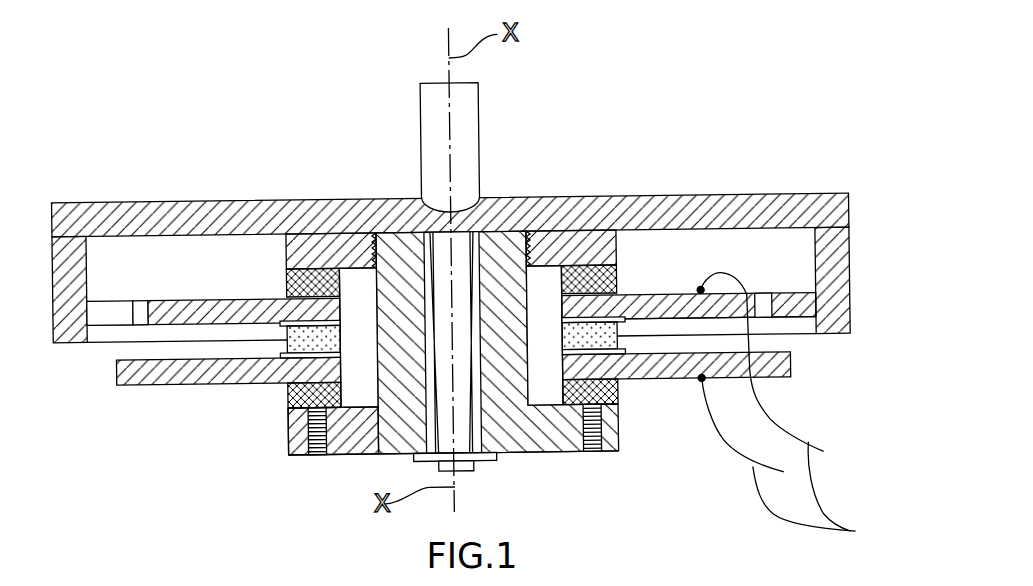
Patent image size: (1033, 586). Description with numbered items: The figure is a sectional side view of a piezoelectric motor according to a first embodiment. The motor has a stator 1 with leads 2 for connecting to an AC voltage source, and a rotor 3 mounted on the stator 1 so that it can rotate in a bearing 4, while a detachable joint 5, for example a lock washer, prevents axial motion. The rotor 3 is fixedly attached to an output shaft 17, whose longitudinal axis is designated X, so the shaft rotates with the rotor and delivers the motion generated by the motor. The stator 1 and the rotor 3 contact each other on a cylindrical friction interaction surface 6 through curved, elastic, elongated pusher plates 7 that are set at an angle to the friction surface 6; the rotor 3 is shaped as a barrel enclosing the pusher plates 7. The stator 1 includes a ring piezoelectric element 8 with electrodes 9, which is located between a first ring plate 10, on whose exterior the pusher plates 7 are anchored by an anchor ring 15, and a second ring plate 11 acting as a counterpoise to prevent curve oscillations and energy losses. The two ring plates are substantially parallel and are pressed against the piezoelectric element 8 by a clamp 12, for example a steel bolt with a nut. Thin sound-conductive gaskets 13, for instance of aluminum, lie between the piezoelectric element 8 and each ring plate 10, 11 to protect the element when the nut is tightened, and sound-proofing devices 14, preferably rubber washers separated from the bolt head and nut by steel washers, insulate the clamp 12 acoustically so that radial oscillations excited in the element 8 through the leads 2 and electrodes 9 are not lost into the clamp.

The stator 1 is at (337, 466).
The leads 2 is at (786, 411).
The rotor 3 is at (721, 207).
The bearing 4 is at (478, 235).
The detachable joint 5 is at (483, 455).
The cylindrical friction interaction surface 6 is at (817, 307).
The pusher plates 7 is at (113, 313).
The ring piezoelectric element 8 is at (333, 346).
The electrodes 9 is at (566, 323).
The first ring plate 10 is at (187, 314).
The second ring plate 11 is at (173, 370).
The clamp 12 is at (528, 444).
The gaskets 13 is at (622, 352).
The sound-proofing devices 14 is at (285, 281).
The anchor ring 15 is at (140, 310).
The output shaft 17 is at (468, 115).